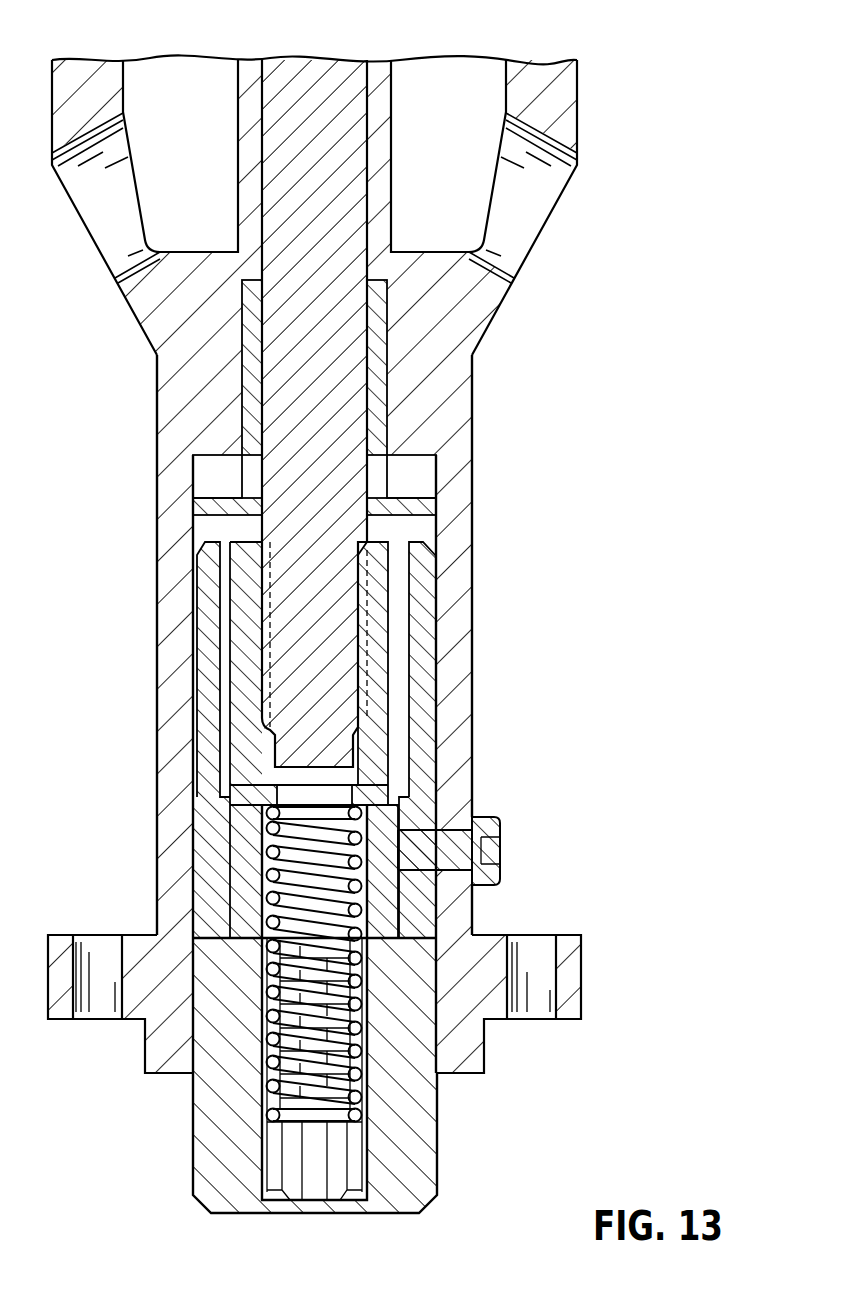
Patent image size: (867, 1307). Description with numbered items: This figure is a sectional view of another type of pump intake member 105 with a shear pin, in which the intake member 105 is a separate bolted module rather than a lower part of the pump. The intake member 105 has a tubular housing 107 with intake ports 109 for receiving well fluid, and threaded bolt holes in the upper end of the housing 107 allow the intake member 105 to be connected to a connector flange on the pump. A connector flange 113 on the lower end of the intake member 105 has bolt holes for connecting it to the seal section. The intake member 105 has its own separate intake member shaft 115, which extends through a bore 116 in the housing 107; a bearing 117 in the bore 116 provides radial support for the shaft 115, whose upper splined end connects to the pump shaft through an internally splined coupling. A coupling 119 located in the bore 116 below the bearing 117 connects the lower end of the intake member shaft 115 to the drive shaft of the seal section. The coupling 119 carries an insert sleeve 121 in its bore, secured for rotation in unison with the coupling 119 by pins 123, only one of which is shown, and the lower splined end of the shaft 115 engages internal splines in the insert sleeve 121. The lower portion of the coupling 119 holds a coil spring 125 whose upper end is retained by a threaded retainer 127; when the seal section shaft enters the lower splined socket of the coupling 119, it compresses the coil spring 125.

The pump intake member 105 is at (512, 472).
The tubular housing 107 is at (578, 85).
The intake ports 109 is at (522, 207).
The connector flange 113 is at (582, 970).
The intake member shaft 115 is at (320, 90).
The bore 116 is at (250, 367).
The bearing 117 is at (378, 356).
The coupling 119 is at (425, 733).
The insert sleeve 121 is at (402, 647).
The pins 123 is at (498, 830).
The coil spring 125 is at (273, 852).
The threaded retainer 127 is at (243, 887).